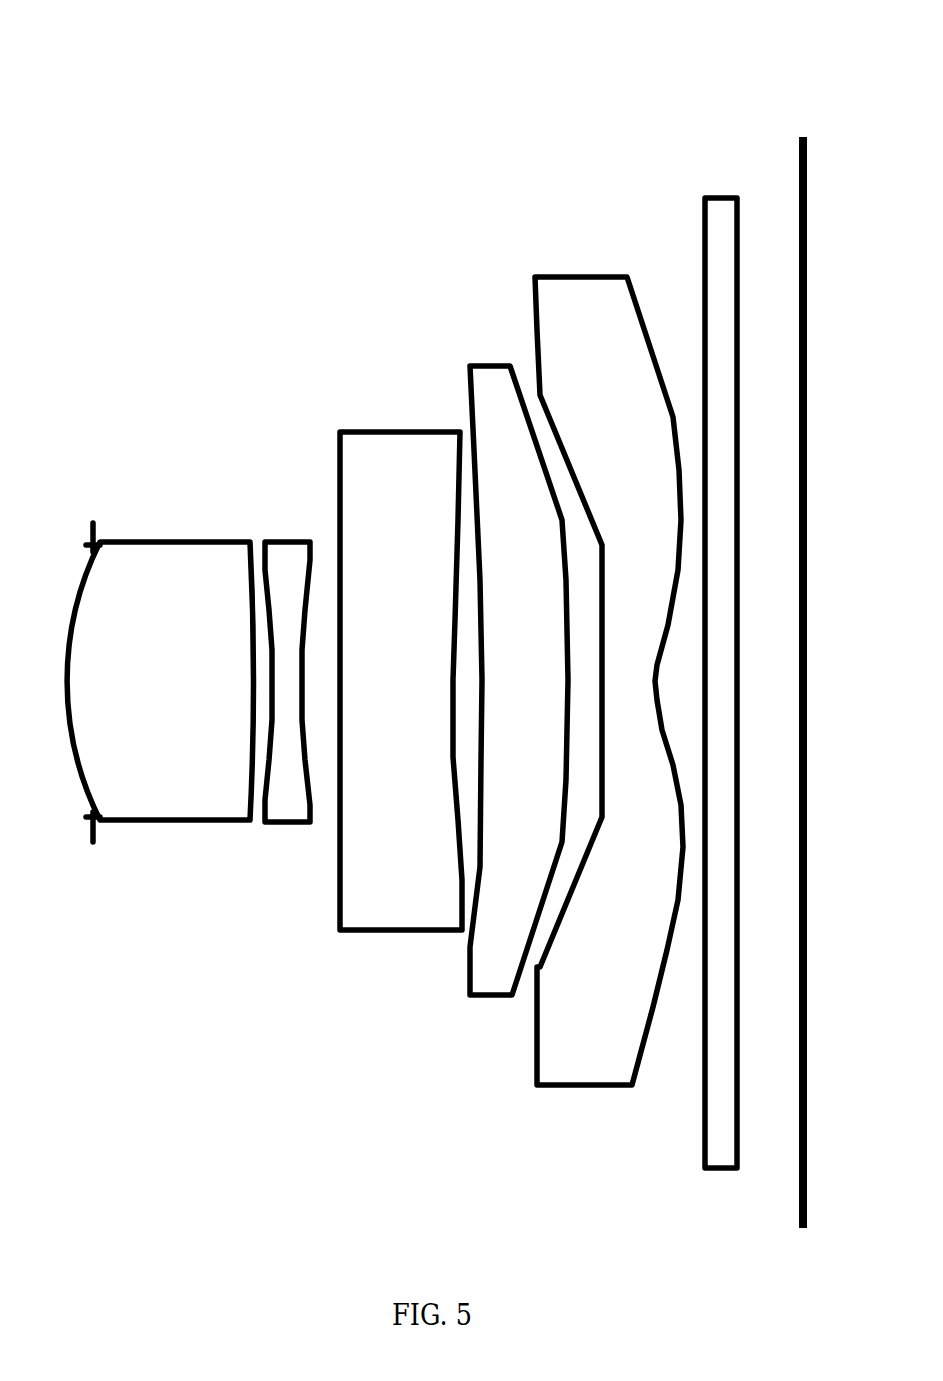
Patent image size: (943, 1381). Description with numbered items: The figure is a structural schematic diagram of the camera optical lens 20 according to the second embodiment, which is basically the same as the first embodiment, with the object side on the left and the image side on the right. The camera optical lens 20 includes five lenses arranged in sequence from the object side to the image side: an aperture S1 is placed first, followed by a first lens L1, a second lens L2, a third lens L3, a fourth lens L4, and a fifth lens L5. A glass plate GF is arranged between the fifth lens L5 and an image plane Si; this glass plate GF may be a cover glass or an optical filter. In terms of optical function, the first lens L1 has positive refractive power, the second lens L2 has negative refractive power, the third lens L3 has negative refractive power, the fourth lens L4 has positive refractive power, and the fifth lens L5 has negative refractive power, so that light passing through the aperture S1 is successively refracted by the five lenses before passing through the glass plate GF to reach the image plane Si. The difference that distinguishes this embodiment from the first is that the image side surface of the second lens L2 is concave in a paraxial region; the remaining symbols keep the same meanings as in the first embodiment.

The camera optical lens 20 is at (423, 46).
The aperture S1 is at (93, 667).
The first lens L1 is at (160, 663).
The second lens L2 is at (287, 664).
The third lens L3 is at (401, 662).
The fourth lens L4 is at (519, 661).
The fifth lens L5 is at (609, 663).
The glass plate GF is at (721, 664).
The image plane Si is at (798, 667).